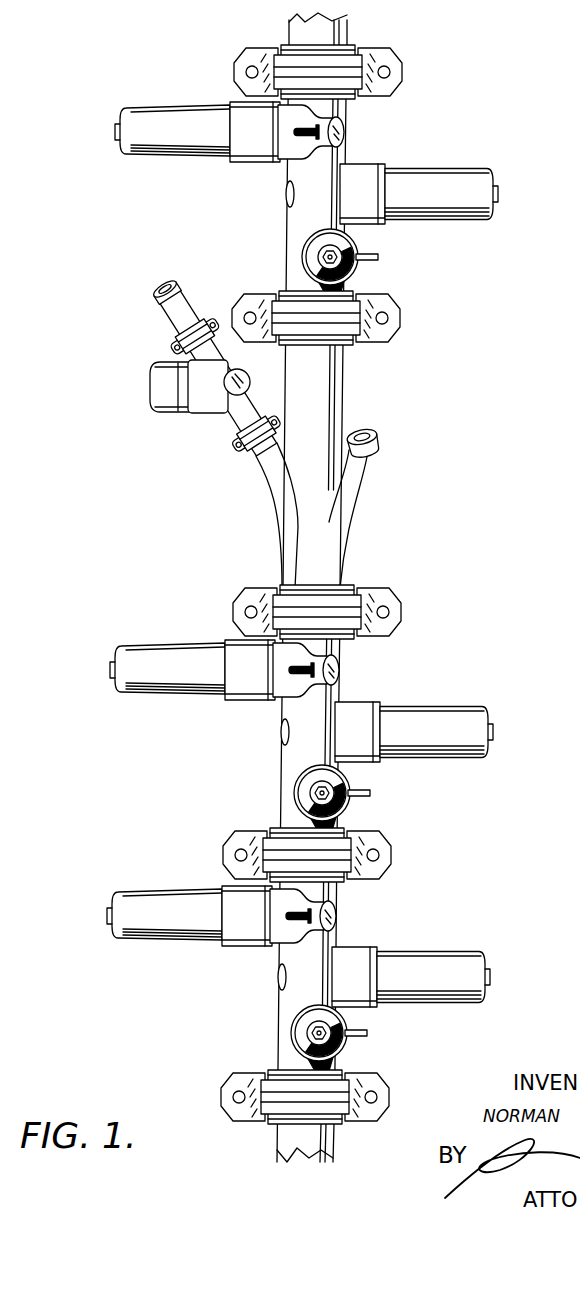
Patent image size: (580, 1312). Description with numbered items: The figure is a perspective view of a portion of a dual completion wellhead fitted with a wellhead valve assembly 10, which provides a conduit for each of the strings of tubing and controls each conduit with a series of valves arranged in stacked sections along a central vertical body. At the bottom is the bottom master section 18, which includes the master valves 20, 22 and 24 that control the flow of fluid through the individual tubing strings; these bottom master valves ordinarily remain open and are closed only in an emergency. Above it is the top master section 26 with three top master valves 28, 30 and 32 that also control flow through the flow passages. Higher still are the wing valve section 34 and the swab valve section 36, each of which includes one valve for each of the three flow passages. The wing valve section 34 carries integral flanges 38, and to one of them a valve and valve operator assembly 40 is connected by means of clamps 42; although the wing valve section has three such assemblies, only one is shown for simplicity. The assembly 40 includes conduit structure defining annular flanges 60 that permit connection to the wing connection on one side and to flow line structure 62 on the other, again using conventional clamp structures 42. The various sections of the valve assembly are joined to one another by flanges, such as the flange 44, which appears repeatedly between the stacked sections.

The wellhead valve assembly 10 is at (266, 1051).
The bottom master section 18 is at (293, 1006).
The master valve 20 is at (342, 1021).
The master valve 22 is at (415, 968).
The master valve 24 is at (173, 905).
The top master section 26 is at (292, 762).
The top master valve 28 is at (338, 781).
The top master valve 30 is at (428, 727).
The top master valve 32 is at (166, 665).
The wing valve section 34 is at (318, 392).
The swab valve section 36 is at (297, 212).
The integral flange 38 is at (378, 437).
The valve and valve operator assembly 40 is at (158, 390).
The clamp 42 is at (183, 344).
The flange 44 is at (401, 74).
The annular flange 60 is at (228, 353).
The flow line structure 62 is at (173, 307).